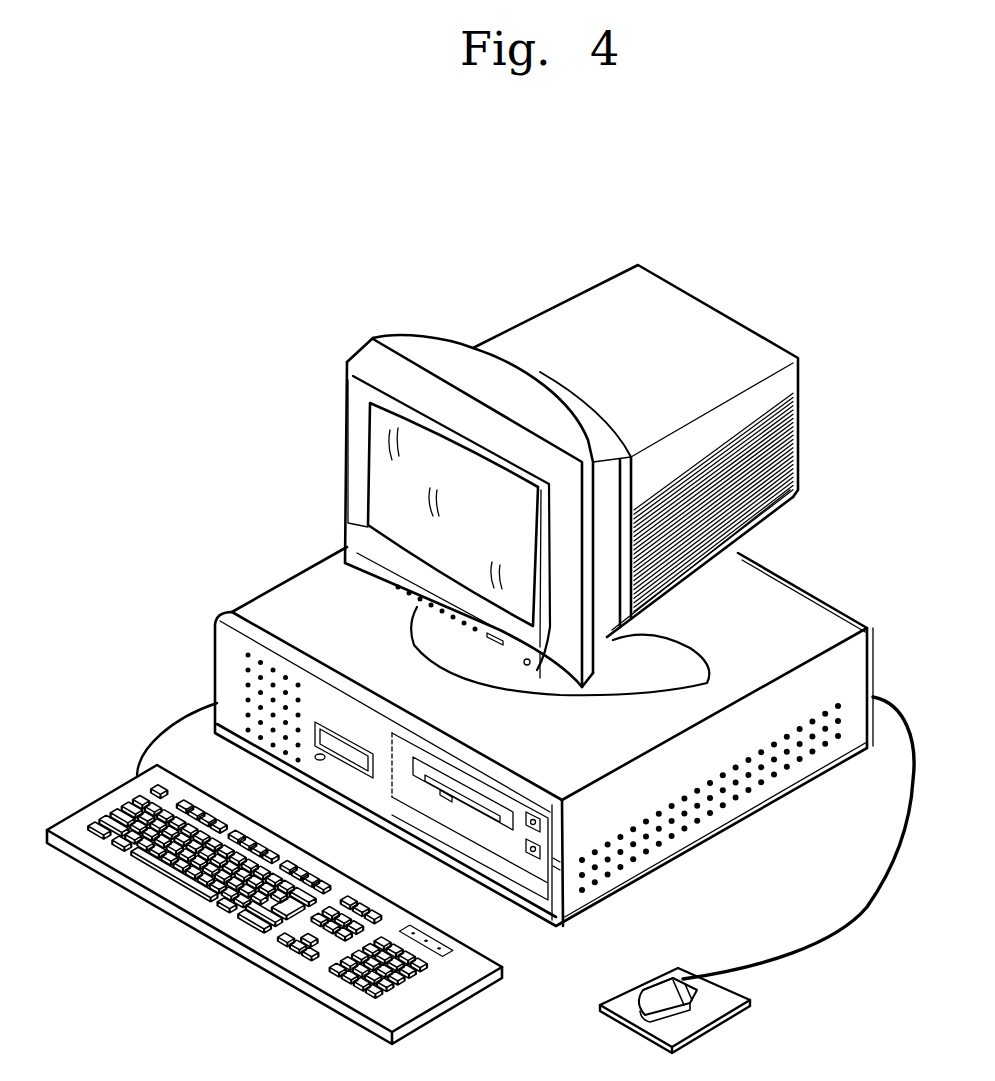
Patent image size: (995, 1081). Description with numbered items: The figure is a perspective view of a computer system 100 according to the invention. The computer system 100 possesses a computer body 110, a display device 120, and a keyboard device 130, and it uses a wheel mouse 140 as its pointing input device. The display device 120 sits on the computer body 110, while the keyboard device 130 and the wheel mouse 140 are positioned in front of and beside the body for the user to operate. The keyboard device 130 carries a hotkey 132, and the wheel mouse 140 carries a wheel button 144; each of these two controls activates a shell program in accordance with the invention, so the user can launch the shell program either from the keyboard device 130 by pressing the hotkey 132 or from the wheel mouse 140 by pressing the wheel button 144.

The computer system 100 is at (323, 241).
The computer body 110 is at (810, 613).
The display device 120 is at (710, 303).
The keyboard device 130 is at (292, 893).
The hotkey 132 is at (93, 817).
The wheel mouse 140 is at (682, 982).
The wheel button 144 is at (679, 983).